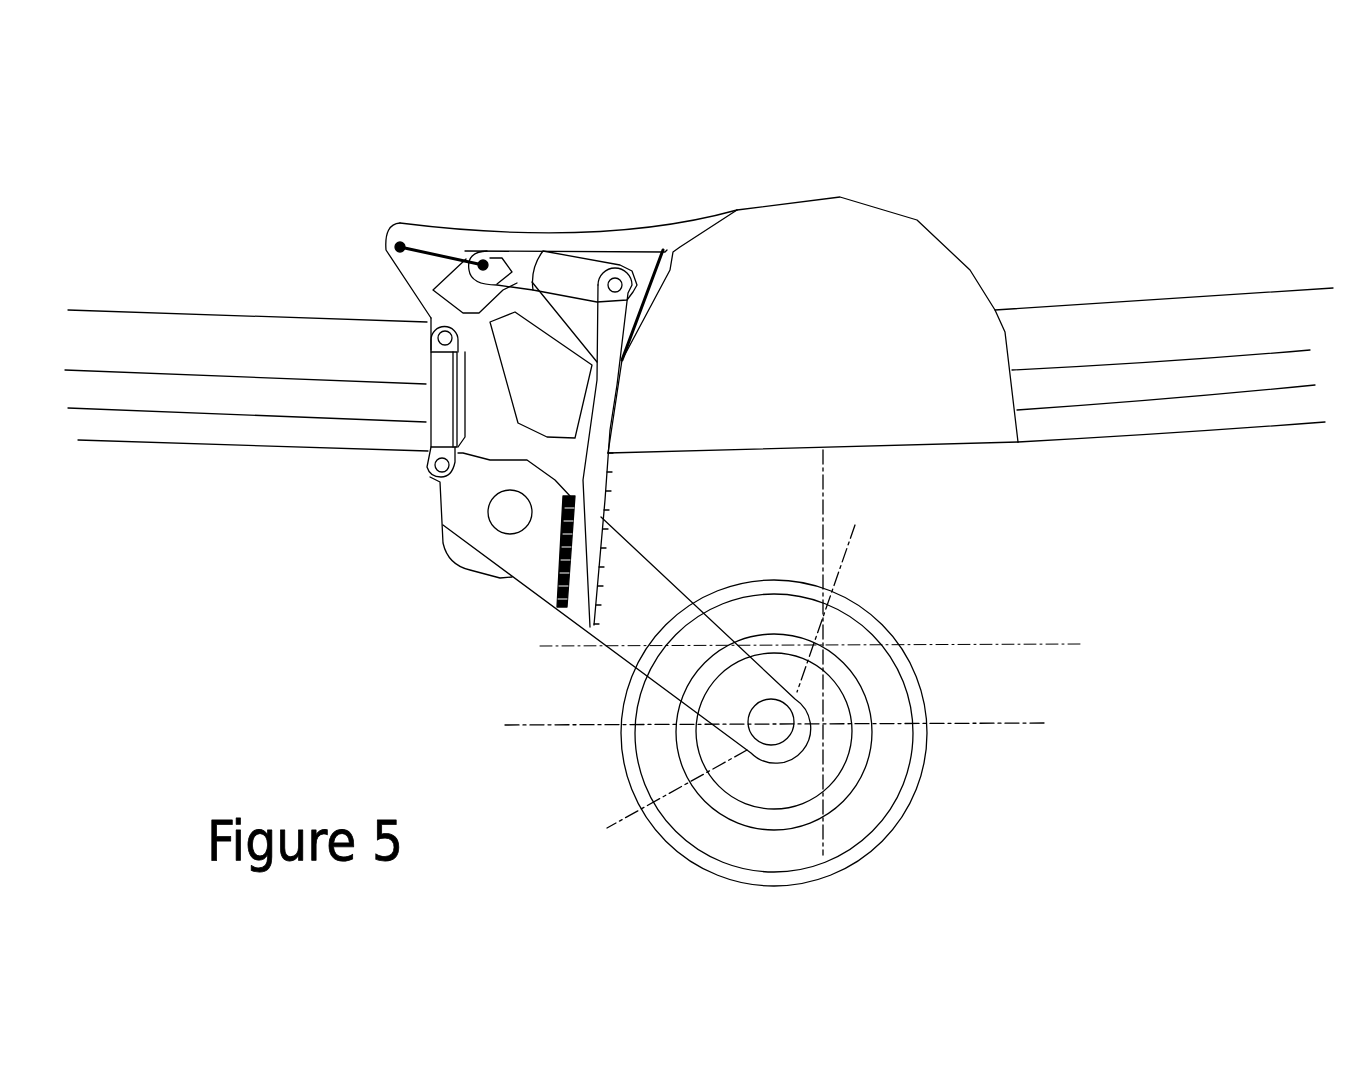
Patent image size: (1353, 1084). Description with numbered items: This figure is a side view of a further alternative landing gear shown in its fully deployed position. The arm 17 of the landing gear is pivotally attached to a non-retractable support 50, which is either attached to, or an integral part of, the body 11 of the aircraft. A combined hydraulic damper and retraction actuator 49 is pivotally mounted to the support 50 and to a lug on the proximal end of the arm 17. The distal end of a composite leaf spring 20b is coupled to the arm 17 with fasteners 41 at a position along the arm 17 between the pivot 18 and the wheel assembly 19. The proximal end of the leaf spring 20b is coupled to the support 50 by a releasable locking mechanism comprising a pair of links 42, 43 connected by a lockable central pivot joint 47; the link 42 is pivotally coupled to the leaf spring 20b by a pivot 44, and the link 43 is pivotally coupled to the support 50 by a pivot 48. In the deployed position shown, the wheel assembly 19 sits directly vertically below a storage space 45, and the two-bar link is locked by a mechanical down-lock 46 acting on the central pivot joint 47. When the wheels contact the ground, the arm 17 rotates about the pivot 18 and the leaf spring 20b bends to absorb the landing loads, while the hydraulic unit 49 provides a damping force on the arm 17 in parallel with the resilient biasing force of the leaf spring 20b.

The body 11 is at (195, 447).
The arm 17 is at (625, 632).
The pivot 18 is at (505, 518).
The wheel assembly 19 is at (873, 795).
The composite leaf spring 20b is at (590, 481).
The fasteners 41 is at (546, 574).
The link 42 is at (563, 270).
The link 43 is at (447, 253).
The pivot 44 is at (617, 283).
The storage space 45 is at (823, 238).
The mechanical down-lock 46 is at (457, 288).
The lockable central pivot joint 47 is at (484, 262).
The pivot 48 is at (400, 247).
The combined hydraulic damper/retraction actuator 49 is at (437, 428).
The non-retractable support 50 is at (528, 235).